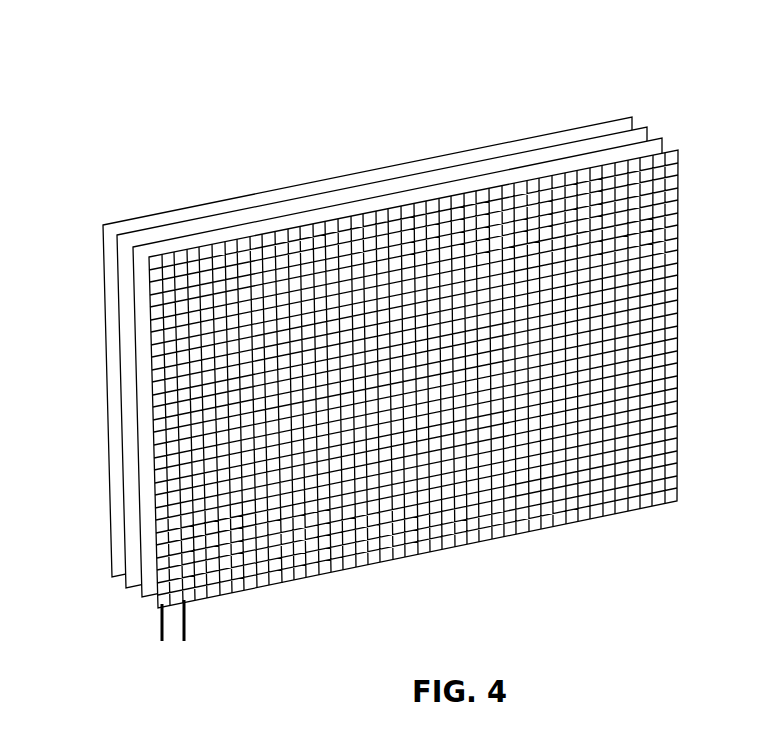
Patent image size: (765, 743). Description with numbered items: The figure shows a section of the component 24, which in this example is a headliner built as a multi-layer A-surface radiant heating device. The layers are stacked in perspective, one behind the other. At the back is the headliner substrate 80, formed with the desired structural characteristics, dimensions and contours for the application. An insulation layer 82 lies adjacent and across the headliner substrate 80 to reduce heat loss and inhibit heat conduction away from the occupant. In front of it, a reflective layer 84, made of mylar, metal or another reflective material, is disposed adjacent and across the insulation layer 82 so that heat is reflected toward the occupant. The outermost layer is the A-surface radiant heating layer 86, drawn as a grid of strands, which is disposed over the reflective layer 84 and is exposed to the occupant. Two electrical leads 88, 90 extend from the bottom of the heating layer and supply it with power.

The component 24 is at (359, 358).
The headliner substrate 80 is at (168, 210).
The insulation layer 82 is at (283, 200).
The reflective layer 84 is at (433, 185).
The A-surface radiant heating layer 86 is at (547, 175).
The electrical lead 88 is at (157, 632).
The electrical lead 90 is at (187, 617).